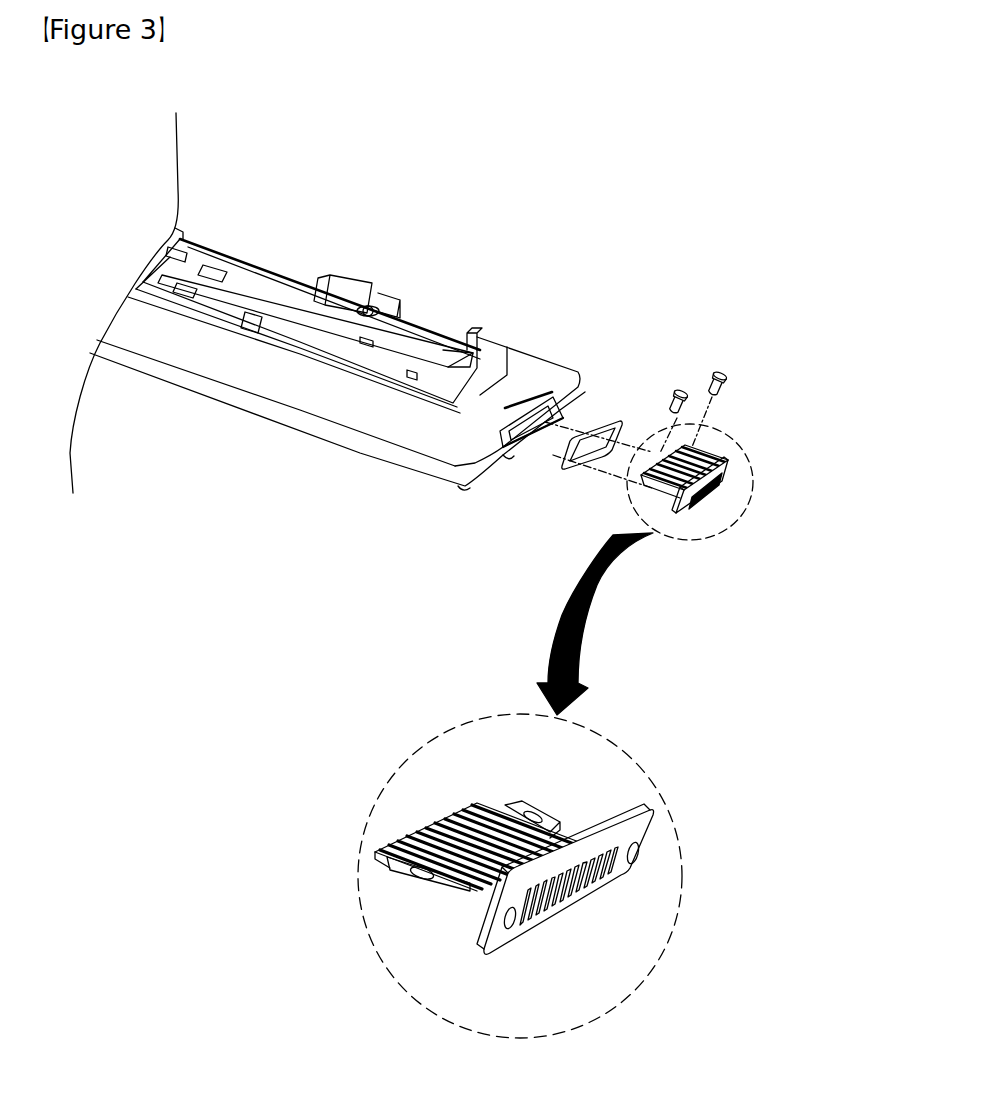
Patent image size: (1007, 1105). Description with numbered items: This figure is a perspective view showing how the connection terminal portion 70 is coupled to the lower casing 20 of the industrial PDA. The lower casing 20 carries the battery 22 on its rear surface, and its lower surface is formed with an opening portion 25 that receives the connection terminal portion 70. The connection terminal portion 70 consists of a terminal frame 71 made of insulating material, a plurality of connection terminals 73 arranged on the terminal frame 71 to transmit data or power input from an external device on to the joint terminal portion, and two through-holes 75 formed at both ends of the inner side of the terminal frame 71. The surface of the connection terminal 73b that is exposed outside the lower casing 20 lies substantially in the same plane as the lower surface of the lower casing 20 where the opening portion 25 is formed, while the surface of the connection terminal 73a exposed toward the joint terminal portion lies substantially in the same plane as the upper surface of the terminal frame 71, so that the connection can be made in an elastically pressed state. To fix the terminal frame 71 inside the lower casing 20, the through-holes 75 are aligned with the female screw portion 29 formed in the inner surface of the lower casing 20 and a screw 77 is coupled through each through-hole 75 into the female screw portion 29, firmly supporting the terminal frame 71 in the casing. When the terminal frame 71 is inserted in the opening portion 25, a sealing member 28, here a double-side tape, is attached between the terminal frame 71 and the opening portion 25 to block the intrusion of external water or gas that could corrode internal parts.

The lower casing 20 is at (345, 321).
The battery 22 is at (382, 450).
The opening portion 25 is at (572, 417).
The sealing member 28 is at (567, 473).
The female screw portion 29 is at (512, 402).
The connection terminal portion 70 is at (538, 731).
The terminal frame 71 is at (488, 803).
The connection terminals 73 is at (487, 668).
The connection terminal 73a is at (478, 805).
The connection terminal 73b is at (462, 888).
The through-holes 75 is at (537, 813).
The screw 77 is at (727, 378).